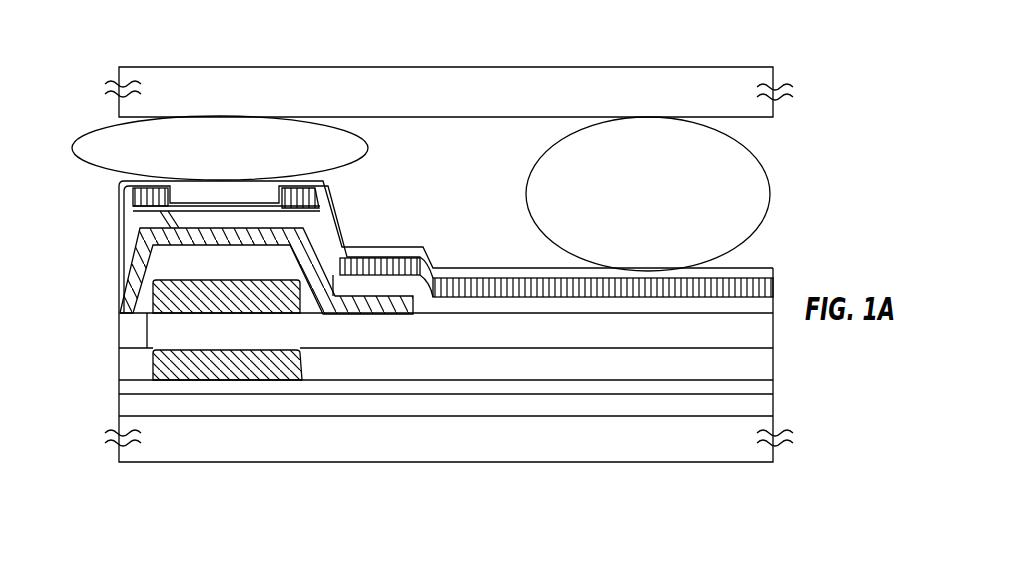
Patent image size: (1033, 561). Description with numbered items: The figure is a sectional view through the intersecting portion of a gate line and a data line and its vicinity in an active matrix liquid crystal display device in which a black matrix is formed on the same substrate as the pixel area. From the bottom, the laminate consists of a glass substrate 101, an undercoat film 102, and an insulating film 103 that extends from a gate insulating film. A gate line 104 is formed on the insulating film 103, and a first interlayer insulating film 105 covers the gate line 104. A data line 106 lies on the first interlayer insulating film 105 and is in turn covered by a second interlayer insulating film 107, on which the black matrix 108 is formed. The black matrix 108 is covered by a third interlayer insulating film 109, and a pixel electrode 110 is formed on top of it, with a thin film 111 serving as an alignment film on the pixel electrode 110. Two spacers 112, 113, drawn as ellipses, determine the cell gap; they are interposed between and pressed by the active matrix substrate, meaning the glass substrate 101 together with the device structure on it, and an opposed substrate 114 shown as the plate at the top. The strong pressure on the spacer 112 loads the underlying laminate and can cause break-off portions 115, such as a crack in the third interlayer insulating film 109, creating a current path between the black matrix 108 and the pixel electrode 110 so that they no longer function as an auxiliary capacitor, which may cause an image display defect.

The glass substrate 101 is at (183, 447).
The undercoat film 102 is at (260, 407).
The insulating film 103 is at (343, 387).
The gate line 104 is at (135, 384).
The first interlayer insulating film 105 is at (737, 370).
The data line 106 is at (155, 313).
The second interlayer insulating film 107 is at (660, 328).
The black matrix 108 is at (368, 305).
The third interlayer insulating film 109 is at (452, 308).
The pixel electrode 110 is at (532, 278).
The thin film 111 is at (343, 255).
The spacer 112 is at (177, 116).
The spacer 113 is at (643, 142).
The opposed substrate 114 is at (715, 105).
The break-off portions 115 is at (302, 200).